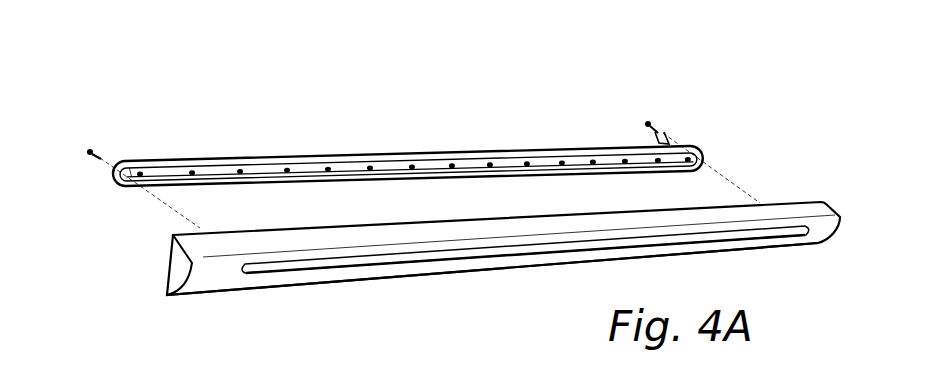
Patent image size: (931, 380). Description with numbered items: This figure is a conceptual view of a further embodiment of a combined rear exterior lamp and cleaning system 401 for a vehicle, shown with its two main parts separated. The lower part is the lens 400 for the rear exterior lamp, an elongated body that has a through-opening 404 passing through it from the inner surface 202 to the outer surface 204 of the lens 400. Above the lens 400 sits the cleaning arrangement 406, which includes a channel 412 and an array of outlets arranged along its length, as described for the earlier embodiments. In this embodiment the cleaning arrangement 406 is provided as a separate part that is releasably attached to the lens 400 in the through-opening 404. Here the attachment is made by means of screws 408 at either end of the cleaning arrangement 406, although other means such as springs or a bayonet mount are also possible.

The combined rear exterior lamp and cleaning system 401 is at (138, 88).
The cleaning arrangement 406 is at (408, 111).
The channel 412 is at (408, 166).
The screws 408 is at (87, 150).
The lens 400 is at (460, 284).
The inner surface 202 is at (196, 266).
The outer surface 204 is at (220, 277).
The through-opening 404 is at (790, 238).